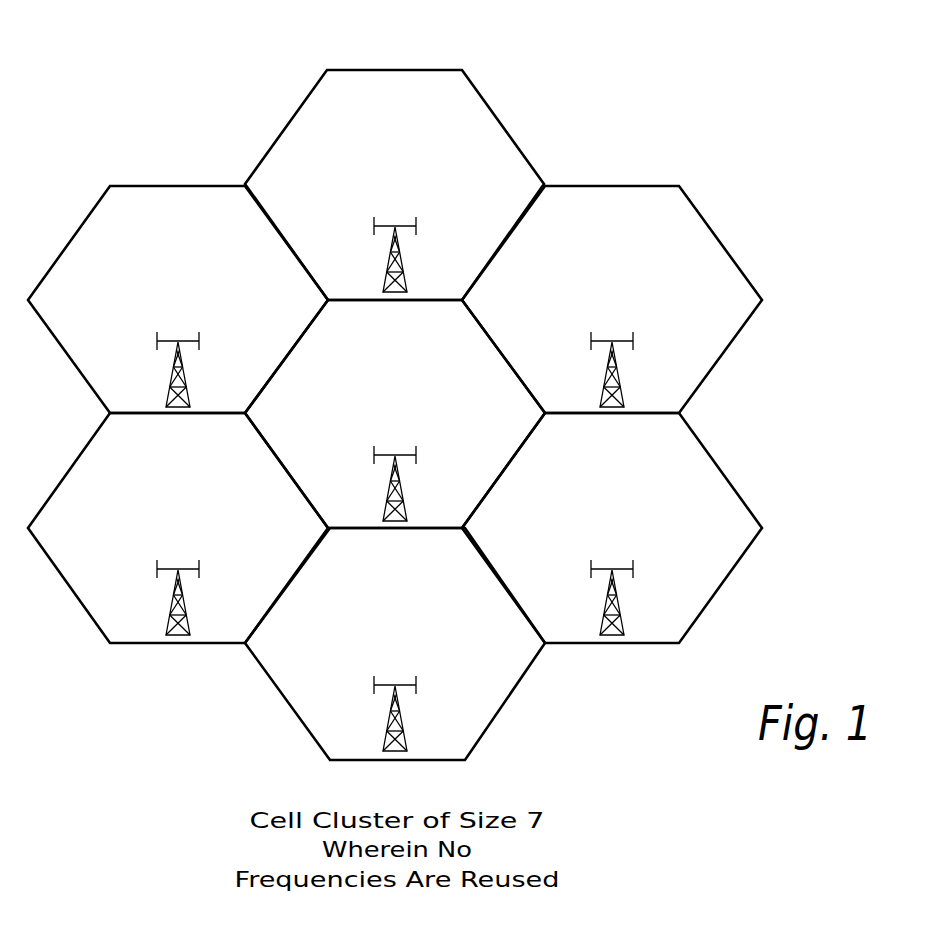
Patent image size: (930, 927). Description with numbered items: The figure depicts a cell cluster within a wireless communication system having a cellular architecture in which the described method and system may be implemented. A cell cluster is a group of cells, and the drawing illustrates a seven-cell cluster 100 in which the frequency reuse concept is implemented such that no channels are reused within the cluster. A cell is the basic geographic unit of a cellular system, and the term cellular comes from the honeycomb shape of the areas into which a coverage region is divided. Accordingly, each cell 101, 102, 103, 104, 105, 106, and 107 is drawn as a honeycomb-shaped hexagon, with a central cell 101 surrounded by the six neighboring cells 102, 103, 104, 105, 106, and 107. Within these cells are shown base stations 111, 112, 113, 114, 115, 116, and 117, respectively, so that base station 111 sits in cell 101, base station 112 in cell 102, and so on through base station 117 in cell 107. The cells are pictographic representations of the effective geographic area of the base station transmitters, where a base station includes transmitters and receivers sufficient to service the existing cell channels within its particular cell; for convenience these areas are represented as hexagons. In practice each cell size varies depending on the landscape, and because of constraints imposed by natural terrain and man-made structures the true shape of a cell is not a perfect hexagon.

The seven-cell cluster 100 is at (642, 62).
The cell 101 is at (457, 430).
The cell 102 is at (456, 201).
The cell 103 is at (674, 316).
The cell 104 is at (674, 544).
The cell 105 is at (457, 660).
The cell 106 is at (240, 544).
The cell 107 is at (240, 316).
The base station 111 is at (426, 483).
The base station 112 is at (426, 254).
The base station 113 is at (643, 369).
The base station 114 is at (643, 597).
The base station 115 is at (426, 713).
The base station 116 is at (209, 597).
The base station 117 is at (209, 369).